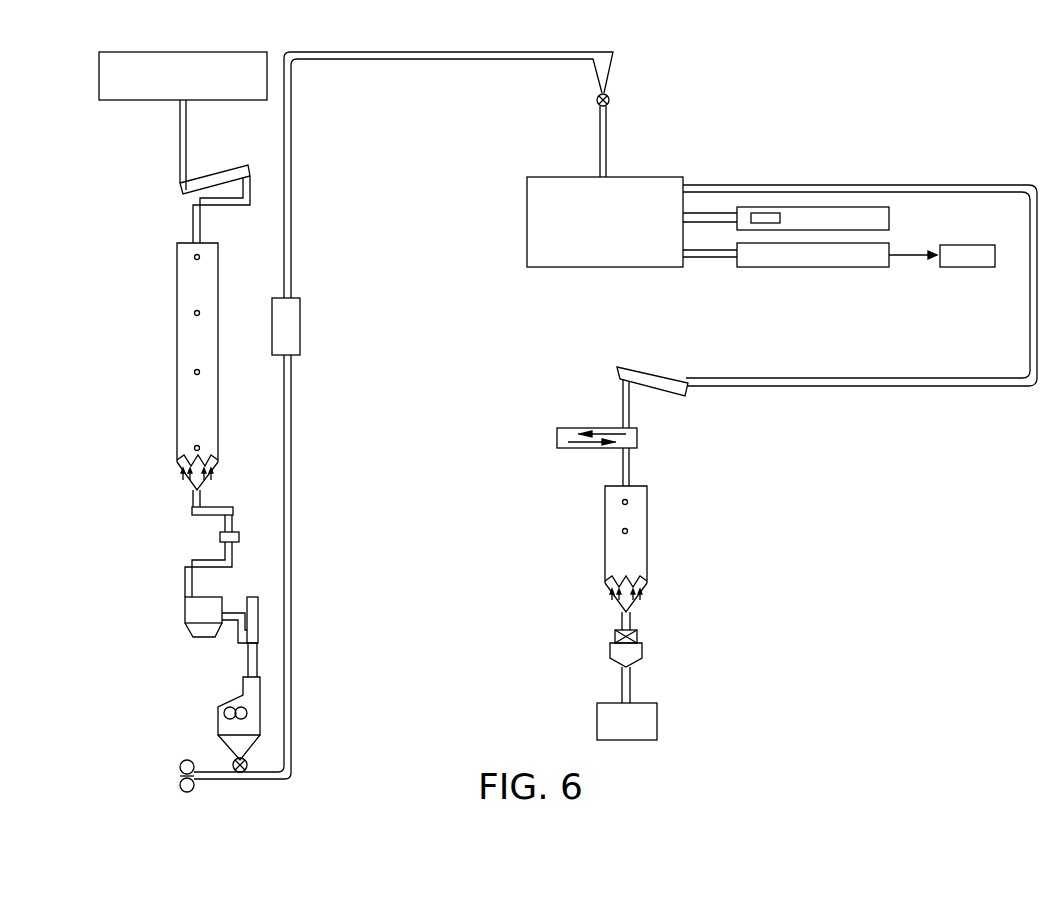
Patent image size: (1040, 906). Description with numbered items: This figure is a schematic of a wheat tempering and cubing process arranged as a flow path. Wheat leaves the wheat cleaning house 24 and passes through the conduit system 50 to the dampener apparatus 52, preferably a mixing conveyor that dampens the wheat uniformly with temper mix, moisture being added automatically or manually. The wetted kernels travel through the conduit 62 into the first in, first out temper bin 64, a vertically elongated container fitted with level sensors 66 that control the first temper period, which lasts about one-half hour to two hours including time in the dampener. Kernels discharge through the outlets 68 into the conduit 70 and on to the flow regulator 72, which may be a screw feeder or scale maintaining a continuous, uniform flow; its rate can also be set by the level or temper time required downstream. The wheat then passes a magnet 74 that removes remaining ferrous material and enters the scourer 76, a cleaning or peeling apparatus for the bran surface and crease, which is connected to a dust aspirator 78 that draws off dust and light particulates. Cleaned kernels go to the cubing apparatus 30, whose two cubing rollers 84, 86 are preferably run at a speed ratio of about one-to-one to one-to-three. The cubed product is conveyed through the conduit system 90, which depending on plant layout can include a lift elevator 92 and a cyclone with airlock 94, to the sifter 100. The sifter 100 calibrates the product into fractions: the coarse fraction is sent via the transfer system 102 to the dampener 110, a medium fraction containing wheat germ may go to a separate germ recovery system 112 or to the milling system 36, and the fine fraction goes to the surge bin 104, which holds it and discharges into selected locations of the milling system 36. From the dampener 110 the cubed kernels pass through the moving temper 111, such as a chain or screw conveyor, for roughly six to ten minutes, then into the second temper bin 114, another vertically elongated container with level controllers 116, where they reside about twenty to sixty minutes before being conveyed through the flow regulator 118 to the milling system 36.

The wheat cleaning house 24 is at (104, 77).
The cubing apparatus 30 is at (259, 697).
The milling system 36 is at (889, 220).
The conduit system 50 is at (183, 133).
The dampener apparatus 52 is at (232, 163).
The conduit 62 is at (220, 208).
The temper bin 64 is at (186, 271).
The level sensors 66 is at (194, 313).
The outlets 68 is at (219, 462).
The conduit 70 is at (203, 500).
The flow regulator 72 is at (192, 511).
The magnet 74 is at (222, 537).
The scourer 76 is at (204, 598).
The dust aspirator 78 is at (260, 617).
The cubing roller 84 is at (225, 709).
The cubing roller 86 is at (247, 713).
The conduit system 90 is at (404, 56).
The lift elevator 92 is at (300, 322).
The cyclone with airlock 94 is at (611, 62).
The sifter 100 is at (640, 176).
The transfer system 102 is at (870, 185).
The surge bin 104 is at (870, 260).
The dampener 110 is at (679, 393).
The moving temper 111 is at (572, 430).
The germ recovery system 112 is at (766, 214).
The second temper bin 114 is at (648, 500).
The level controllers 116 is at (622, 502).
The flow regulator 118 is at (640, 651).